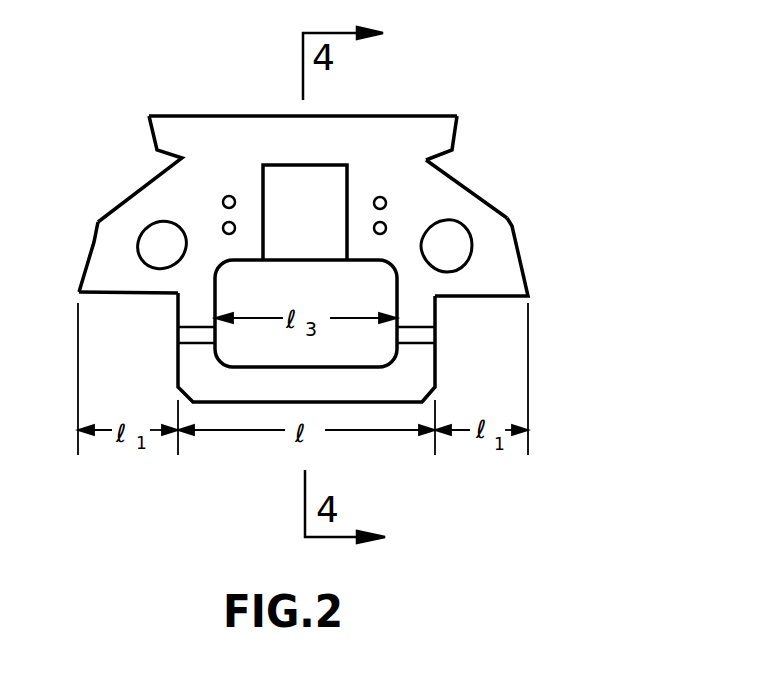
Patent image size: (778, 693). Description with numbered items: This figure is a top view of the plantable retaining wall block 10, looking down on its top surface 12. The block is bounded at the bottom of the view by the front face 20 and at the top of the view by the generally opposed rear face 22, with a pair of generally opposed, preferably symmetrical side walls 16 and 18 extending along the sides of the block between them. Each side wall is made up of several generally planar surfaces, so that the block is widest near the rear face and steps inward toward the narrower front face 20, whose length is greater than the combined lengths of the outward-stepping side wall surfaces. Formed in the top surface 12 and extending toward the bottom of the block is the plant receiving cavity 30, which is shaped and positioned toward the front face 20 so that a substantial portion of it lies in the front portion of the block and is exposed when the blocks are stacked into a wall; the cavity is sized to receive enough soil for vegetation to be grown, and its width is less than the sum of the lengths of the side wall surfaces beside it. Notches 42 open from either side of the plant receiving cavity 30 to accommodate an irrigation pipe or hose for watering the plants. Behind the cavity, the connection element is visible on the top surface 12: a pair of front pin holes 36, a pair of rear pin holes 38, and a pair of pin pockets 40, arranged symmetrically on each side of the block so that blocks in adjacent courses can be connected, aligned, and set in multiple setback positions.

The wall block 10 is at (528, 92).
The top surface 12 is at (512, 282).
The side wall 16 is at (485, 207).
The side wall 18 is at (93, 243).
The front face 20 is at (340, 404).
The rear face 22 is at (330, 116).
The plant receiving cavity 30 is at (370, 304).
The front pin holes 36 is at (223, 225).
The rear pin holes 38 is at (223, 199).
The pin pockets 40 is at (146, 242).
The notches 42 is at (193, 338).